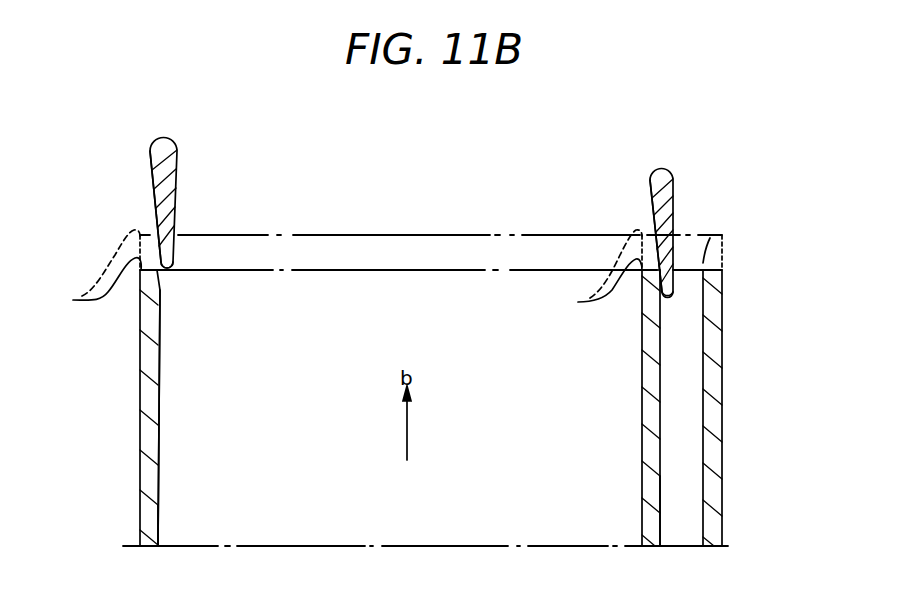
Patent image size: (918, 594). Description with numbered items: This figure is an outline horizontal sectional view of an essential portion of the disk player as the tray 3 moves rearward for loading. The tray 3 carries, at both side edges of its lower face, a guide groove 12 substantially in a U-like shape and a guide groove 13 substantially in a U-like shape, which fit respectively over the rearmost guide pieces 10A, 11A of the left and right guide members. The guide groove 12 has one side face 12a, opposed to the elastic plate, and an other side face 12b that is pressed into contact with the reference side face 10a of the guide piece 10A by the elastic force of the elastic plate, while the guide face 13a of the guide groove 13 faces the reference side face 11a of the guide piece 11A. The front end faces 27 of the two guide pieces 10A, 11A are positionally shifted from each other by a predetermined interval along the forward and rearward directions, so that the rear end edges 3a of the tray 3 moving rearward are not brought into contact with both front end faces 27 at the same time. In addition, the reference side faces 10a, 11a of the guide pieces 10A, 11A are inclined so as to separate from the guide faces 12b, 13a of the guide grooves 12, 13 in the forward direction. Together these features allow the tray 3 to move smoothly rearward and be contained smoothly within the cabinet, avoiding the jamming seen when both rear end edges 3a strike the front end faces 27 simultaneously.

The tray 3 is at (147, 395).
The rear end edges 3a is at (80, 300).
The guide groove 13 is at (163, 451).
The guide face 13a is at (155, 522).
The guide piece 11A is at (172, 179).
The reference side face 11a is at (154, 212).
The guide piece 10A is at (657, 179).
The reference side face 10a is at (652, 225).
The front end faces 27 is at (164, 268).
The guide groove 12 is at (673, 382).
The one side face 12a is at (703, 428).
The other side face 12b is at (654, 493).